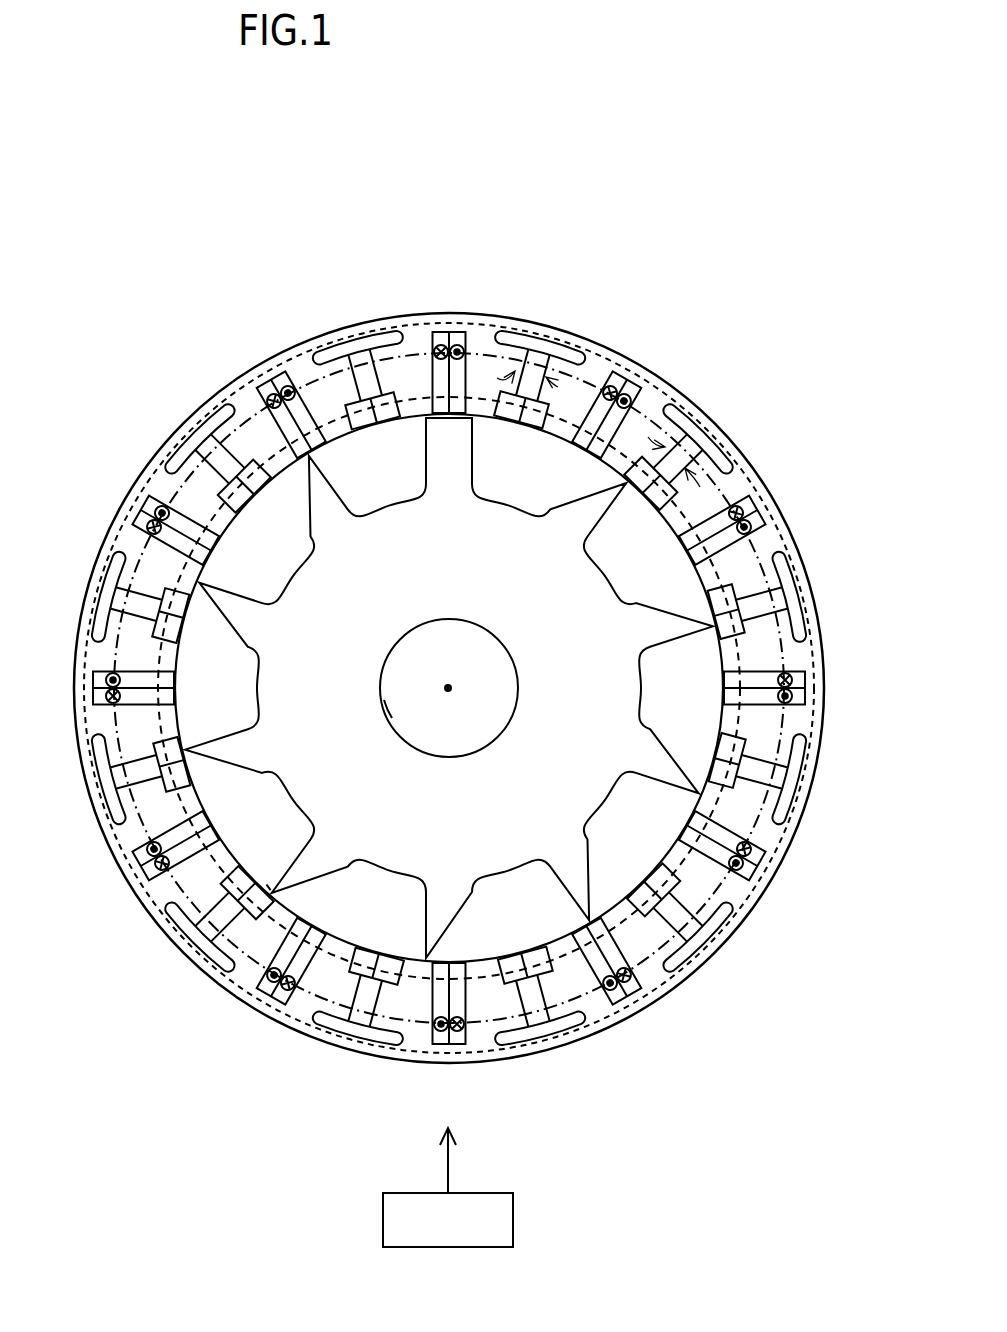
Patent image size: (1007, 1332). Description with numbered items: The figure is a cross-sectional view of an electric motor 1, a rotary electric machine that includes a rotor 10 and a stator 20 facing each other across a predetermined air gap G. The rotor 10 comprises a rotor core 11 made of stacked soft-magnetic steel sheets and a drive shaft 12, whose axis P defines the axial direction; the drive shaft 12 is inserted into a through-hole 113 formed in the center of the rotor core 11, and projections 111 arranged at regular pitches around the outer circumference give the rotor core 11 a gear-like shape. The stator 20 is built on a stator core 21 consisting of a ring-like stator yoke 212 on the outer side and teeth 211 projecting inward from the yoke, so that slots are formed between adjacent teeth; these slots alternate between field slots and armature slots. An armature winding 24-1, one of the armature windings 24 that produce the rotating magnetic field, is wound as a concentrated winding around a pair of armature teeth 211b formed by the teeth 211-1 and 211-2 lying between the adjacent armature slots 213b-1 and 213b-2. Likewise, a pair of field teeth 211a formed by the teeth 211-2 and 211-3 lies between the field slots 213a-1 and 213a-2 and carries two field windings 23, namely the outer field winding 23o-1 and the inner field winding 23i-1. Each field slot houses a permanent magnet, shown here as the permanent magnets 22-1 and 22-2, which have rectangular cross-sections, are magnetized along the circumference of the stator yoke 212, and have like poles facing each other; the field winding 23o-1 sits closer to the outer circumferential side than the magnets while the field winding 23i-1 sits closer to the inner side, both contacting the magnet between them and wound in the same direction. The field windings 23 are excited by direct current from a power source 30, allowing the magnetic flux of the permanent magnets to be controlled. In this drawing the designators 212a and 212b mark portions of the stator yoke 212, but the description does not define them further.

The electric motor 1 is at (177, 177).
The rotor 10 is at (282, 515).
The rotor core 11 is at (449, 688).
The projections 111 is at (423, 450).
The through-hole 113 is at (392, 718).
The drive shaft 12 is at (448, 740).
The axis P is at (452, 687).
The air gap G is at (300, 895).
The stator 20 is at (314, 321).
The stator core 21 is at (158, 362).
The teeth 211 is at (210, 468).
The tooth 211-1 is at (483, 412).
The tooth 211-2 is at (548, 420).
The tooth 211-3 is at (612, 440).
The pair of field teeth 211a is at (553, 547).
The pair of armature teeth 211b is at (460, 547).
The stator yoke 212 is at (190, 433).
The slot portion 212a is at (525, 327).
The bridge portion 212b is at (632, 372).
The field slot 213a-1 is at (554, 327).
The field slot 213a-2 is at (702, 406).
The armature slot 213b-1 is at (432, 333).
The armature slot 213b-2 is at (633, 400).
The permanent magnet 22-1 is at (565, 378).
The permanent magnet 22-2 is at (740, 482).
The field windings 23 is at (599, 550).
The field winding 23i-1 is at (622, 405).
The field winding 23o-1 is at (632, 384).
The armature windings 24 is at (307, 369).
The armature winding 24-1 is at (483, 412).
The power source 30 is at (514, 1215).